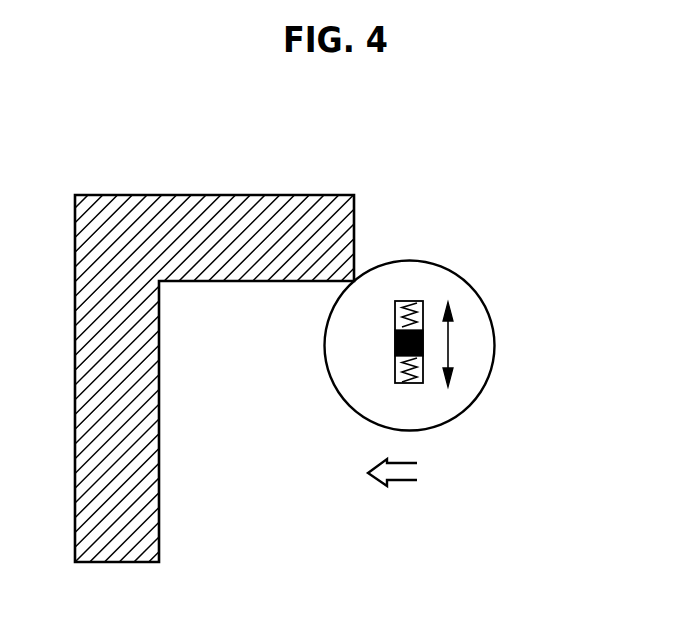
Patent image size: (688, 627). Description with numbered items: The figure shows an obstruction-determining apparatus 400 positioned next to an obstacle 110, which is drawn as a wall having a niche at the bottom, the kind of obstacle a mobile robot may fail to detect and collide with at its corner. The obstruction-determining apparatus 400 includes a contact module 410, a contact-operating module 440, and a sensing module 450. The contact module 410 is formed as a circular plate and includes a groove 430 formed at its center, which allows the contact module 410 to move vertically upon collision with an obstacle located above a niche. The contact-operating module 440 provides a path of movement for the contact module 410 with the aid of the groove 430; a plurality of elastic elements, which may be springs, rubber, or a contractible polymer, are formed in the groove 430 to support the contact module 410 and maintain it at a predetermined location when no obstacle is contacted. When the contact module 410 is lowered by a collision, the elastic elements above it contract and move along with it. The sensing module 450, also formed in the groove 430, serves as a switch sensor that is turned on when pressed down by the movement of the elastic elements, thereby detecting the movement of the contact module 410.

The obstacle 110 is at (299, 195).
The obstruction-determining apparatus 400 is at (444, 323).
The contact module 410 is at (443, 426).
The groove 430 is at (423, 303).
The contact-operating module 440 is at (400, 385).
The sensing module 450 is at (423, 348).